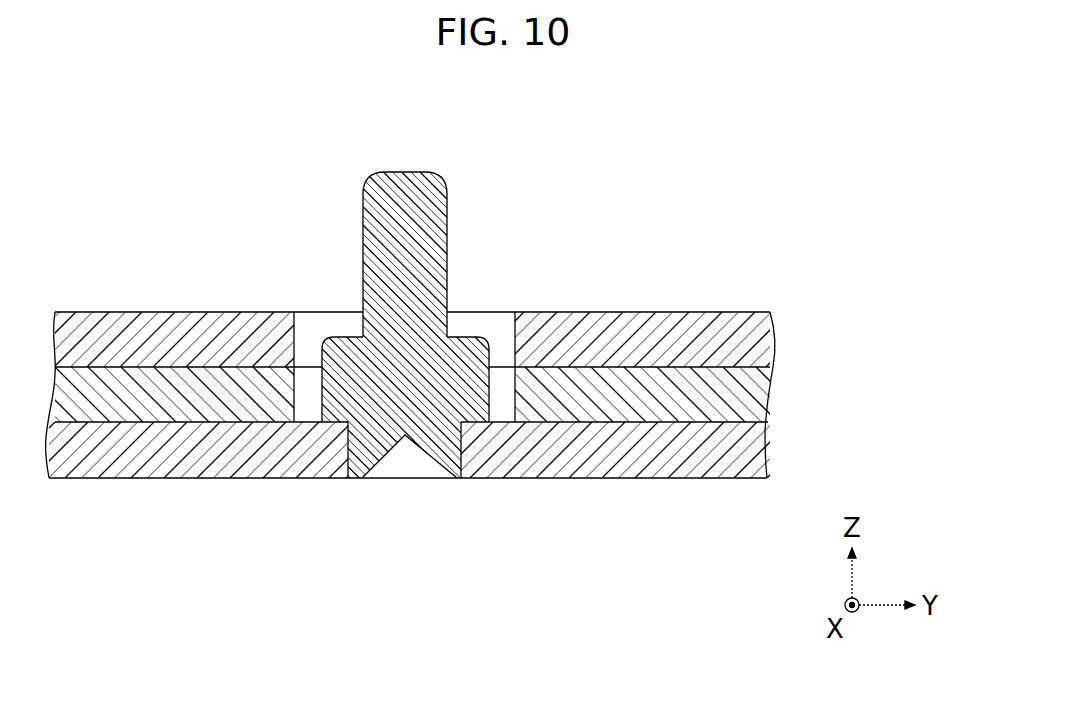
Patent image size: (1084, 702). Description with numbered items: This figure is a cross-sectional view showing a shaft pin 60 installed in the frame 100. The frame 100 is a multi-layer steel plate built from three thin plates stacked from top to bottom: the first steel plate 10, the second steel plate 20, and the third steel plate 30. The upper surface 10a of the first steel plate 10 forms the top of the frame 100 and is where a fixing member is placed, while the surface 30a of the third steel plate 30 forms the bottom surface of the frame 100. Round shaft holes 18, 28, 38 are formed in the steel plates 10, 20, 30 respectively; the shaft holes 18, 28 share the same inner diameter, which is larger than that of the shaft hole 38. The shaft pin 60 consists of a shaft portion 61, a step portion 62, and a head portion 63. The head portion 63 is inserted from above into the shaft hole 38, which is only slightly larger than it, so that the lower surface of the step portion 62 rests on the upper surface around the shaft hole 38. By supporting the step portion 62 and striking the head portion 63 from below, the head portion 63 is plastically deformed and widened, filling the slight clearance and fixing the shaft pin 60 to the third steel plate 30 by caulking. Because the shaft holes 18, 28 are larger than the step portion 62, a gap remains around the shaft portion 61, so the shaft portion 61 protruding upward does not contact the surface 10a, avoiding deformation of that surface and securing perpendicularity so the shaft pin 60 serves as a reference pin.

The frame 100 is at (425, 310).
The first steel plate 10 is at (427, 354).
The surface of the first steel plate 10a is at (630, 311).
The shaft hole 18 is at (293, 333).
The second steel plate 20 is at (428, 343).
The shaft hole 28 is at (293, 396).
The third steel plate 30 is at (425, 484).
The surface of the third steel plate 30a is at (628, 478).
The shaft hole 38 is at (346, 450).
The shaft pin 60 is at (403, 327).
The shaft portion 61 is at (440, 224).
The step portion 62 is at (470, 341).
The head portion 63 is at (435, 452).